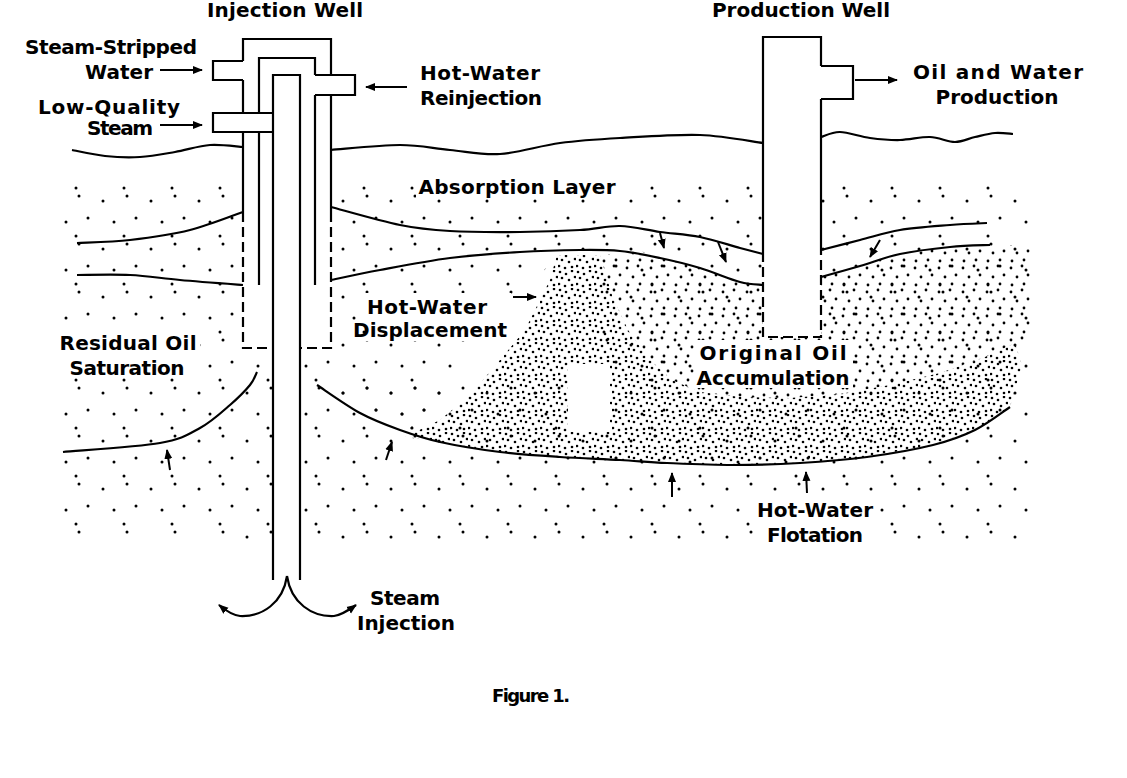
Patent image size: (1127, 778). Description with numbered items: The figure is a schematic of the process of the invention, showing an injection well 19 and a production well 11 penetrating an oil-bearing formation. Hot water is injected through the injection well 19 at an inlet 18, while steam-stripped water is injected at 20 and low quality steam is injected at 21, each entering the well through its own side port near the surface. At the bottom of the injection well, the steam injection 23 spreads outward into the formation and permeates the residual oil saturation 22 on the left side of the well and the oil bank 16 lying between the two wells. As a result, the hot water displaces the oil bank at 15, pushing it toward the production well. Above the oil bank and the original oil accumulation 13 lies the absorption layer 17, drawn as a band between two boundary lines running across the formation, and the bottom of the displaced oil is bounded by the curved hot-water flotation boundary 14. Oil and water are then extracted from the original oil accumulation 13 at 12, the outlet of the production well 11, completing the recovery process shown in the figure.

The production well 11 is at (792, 187).
The oil and water extraction point 12 is at (850, 87).
The original oil accumulation 13 is at (815, 321).
The hot-water flotation boundary 14 is at (933, 452).
The hot water displacement 15 is at (487, 372).
The oil bank 16 is at (713, 360).
The absorption layer 17 is at (553, 198).
The inlet 18 is at (344, 74).
The injection well 19 is at (287, 182).
The steam-stripped water injection point 20 is at (224, 60).
The low quality steam injection point 21 is at (239, 113).
The residual oil saturation 22 is at (158, 360).
The steam injection 23 is at (287, 354).